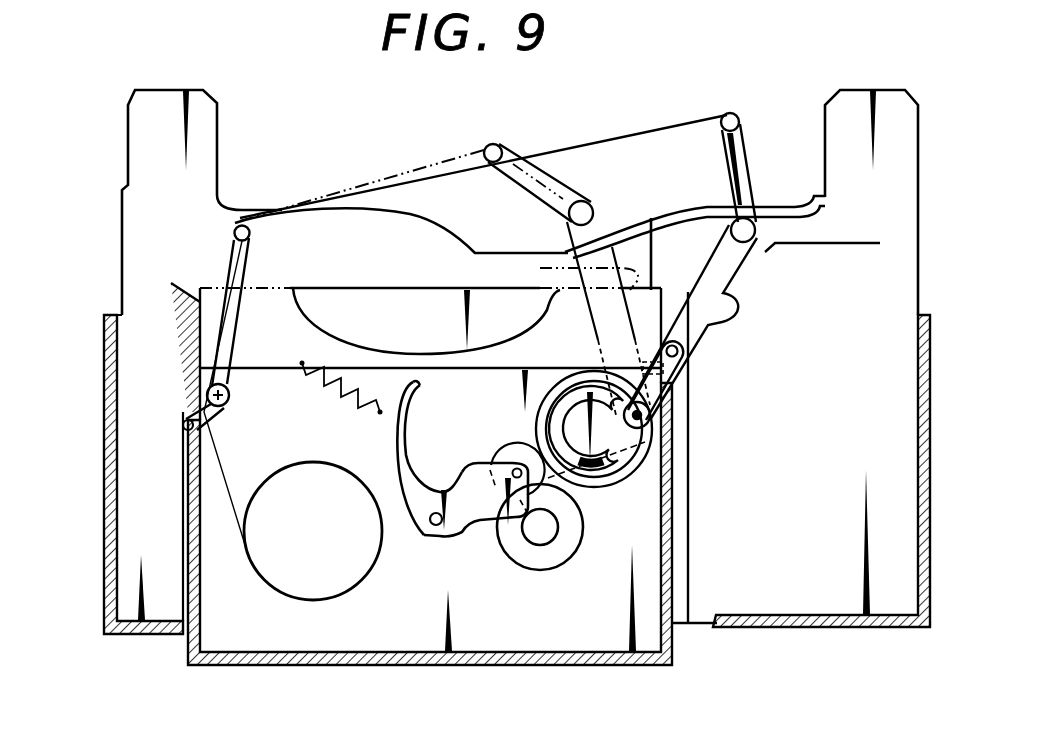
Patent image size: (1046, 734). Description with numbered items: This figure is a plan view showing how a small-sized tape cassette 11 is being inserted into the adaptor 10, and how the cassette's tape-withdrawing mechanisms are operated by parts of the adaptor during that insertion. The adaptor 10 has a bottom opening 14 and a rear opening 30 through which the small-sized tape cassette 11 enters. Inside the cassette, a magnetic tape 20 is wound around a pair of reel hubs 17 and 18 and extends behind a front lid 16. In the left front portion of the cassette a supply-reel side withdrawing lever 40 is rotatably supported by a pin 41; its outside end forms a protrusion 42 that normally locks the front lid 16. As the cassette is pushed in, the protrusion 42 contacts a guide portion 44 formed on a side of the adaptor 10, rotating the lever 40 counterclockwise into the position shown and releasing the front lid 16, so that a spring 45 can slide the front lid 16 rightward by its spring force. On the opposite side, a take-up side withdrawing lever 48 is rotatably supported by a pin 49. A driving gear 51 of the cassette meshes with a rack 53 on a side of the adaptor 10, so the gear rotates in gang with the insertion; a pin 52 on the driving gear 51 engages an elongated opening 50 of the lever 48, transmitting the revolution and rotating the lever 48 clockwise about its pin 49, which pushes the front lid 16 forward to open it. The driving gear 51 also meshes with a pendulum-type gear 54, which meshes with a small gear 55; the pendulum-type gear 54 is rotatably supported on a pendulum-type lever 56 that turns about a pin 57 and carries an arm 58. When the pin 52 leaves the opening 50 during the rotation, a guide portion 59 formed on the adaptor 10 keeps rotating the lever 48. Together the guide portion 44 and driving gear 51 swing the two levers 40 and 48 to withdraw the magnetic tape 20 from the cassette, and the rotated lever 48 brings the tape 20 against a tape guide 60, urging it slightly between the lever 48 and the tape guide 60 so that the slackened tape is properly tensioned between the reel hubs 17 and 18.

The adaptor 10 is at (103, 437).
The small-sized tape cassette 11 is at (213, 540).
The bottom opening 14 is at (405, 216).
The front lid 16 is at (356, 312).
The reel hub 17 is at (292, 598).
The reel hub 18 is at (578, 552).
The magnetic tape 20 is at (356, 188).
The rear opening 30 is at (712, 628).
The supply-reel side withdrawing lever 40 is at (243, 333).
The pin 41 is at (232, 405).
The protrusion 42 is at (182, 432).
The guide portion 44 is at (185, 390).
The spring 45 is at (328, 382).
The take-up side withdrawing lever 48 is at (573, 268).
The pin 49 is at (690, 418).
The elongated opening 50 is at (678, 357).
The driving gear 51 is at (628, 470).
The pin 52 is at (690, 395).
The rack 53 is at (690, 522).
The pendulum-type gear 54 is at (512, 460).
The small gear 55 is at (545, 548).
The pendulum-type lever 56 is at (470, 525).
The pin 57 is at (434, 528).
The arm 58 is at (408, 428).
The guide portion 59 is at (660, 217).
The tape guide 60 is at (838, 243).